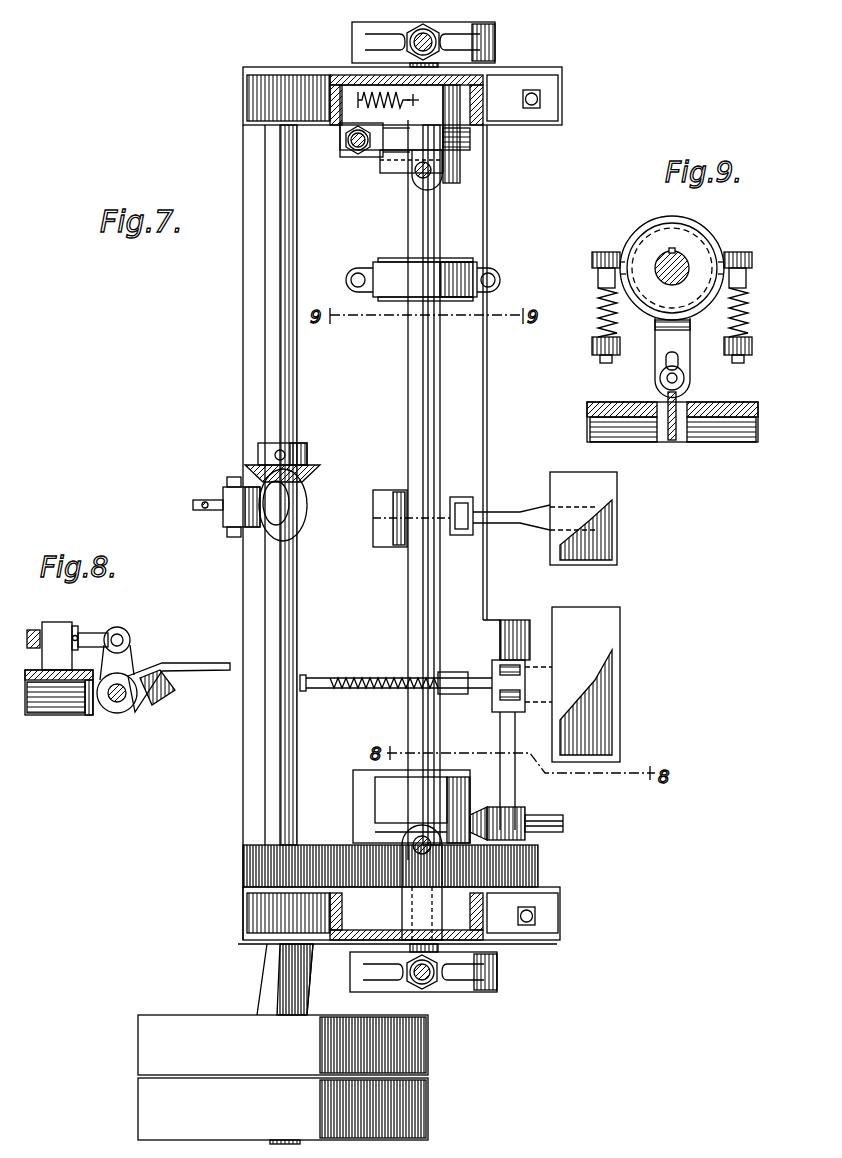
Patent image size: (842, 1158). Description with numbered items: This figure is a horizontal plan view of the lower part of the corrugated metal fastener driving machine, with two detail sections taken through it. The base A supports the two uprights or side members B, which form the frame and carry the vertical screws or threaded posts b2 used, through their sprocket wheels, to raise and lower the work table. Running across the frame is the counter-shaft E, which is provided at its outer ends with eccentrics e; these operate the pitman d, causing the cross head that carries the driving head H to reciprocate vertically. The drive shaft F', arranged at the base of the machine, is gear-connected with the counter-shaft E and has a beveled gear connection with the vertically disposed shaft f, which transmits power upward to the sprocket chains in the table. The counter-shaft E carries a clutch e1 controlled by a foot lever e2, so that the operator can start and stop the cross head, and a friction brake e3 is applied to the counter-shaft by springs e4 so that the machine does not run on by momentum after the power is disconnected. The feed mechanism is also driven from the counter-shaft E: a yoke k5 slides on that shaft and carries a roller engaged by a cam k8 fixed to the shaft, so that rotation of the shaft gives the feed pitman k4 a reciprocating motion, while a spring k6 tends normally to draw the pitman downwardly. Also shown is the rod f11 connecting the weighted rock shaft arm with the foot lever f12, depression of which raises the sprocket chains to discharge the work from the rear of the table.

In FIG. 7, the uprights or side members B is at (478, 102).
In FIG. 7, the drive shaft F' is at (291, 485).
In FIG. 7, the counter-shaft E is at (423, 428).
In FIG. 9, the counter-shaft E is at (688, 258).
In FIG. 7, the eccentrics e is at (495, 36).
In FIG. 7, the pitman d is at (408, 42).
In FIG. 7, the spring k6 is at (372, 92).
In FIG. 7, the cam k8 is at (455, 163).
In FIG. 7, the yoke k5 is at (455, 135).
In FIG. 7, the pitman k4 is at (352, 150).
In FIG. 7, the vertical screws or threaded posts b2 is at (420, 172).
In FIG. 7, the friction brake e3 is at (468, 262).
In FIG. 9, the friction brake e3 is at (656, 248).
In FIG. 7, the springs e4 is at (346, 278).
In FIG. 9, the springs e4 is at (595, 320).
In FIG. 7, the vertically disposed shaft f is at (207, 508).
In FIG. 7, the rod f11 is at (470, 497).
In FIG. 7, the foot lever f12 is at (600, 545).
In FIG. 7, the base A is at (470, 613).
In FIG. 9, the base A is at (600, 428).
In FIG. 7, the foot lever e2 is at (580, 677).
In FIG. 8, the foot lever e2 is at (196, 666).
In FIG. 7, the clutch e1 is at (395, 808).
In FIG. 8, the driving head H is at (60, 710).